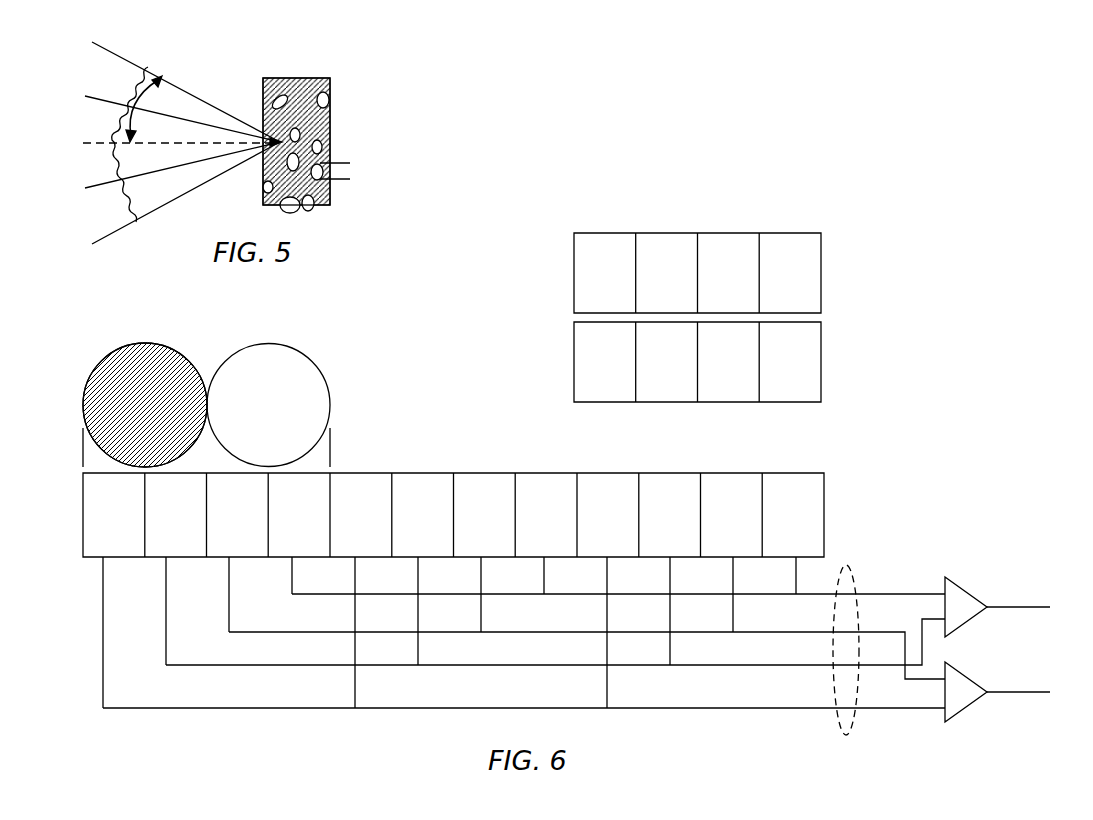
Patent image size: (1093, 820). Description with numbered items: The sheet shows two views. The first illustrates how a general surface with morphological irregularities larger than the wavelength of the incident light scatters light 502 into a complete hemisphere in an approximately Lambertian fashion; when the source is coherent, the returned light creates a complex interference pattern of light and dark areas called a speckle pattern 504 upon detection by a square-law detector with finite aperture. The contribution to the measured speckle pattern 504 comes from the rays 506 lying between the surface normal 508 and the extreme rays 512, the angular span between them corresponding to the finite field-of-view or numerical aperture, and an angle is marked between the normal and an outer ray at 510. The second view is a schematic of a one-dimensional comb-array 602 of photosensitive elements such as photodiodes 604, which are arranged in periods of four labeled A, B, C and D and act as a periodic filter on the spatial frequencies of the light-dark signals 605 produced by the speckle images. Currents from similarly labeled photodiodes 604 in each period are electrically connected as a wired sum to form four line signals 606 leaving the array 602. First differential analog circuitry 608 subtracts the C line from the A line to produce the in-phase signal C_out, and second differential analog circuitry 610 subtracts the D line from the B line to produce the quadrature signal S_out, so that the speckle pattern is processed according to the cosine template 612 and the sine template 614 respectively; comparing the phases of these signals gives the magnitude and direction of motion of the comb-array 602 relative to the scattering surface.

In FIG. 5, the light 502 is at (98, 122).
In FIG. 5, the speckle pattern 504 is at (311, 73).
In FIG. 5, the rays 506 is at (151, 111).
In FIG. 5, the surface normal 508 is at (88, 143).
In FIG. 5, the scattering angle theta 510 is at (142, 118).
In FIG. 5, the extreme rays 512 is at (169, 78).
In FIG. 6, the 1D comb-array 602 is at (492, 496).
In FIG. 6, the photodiodes 604 is at (792, 473).
In FIG. 6, the light-dark signals 605 is at (352, 404).
In FIG. 6, the line signals 606 is at (848, 568).
In FIG. 6, the first differential analog circuitry 608 is at (958, 711).
In FIG. 6, the second differential analog circuitry 610 is at (957, 588).
In FIG. 6, the cosine template 612 is at (486, 271).
In FIG. 6, the sine template 614 is at (486, 353).